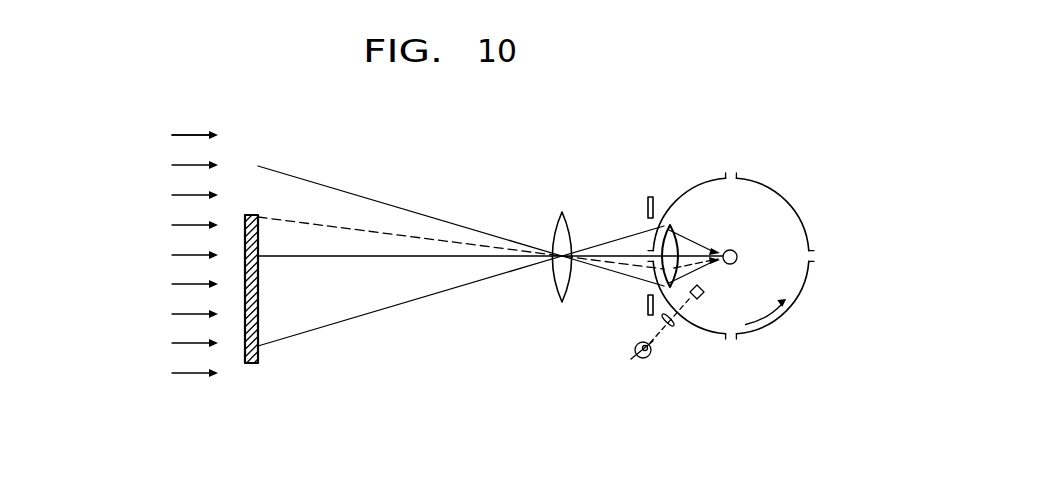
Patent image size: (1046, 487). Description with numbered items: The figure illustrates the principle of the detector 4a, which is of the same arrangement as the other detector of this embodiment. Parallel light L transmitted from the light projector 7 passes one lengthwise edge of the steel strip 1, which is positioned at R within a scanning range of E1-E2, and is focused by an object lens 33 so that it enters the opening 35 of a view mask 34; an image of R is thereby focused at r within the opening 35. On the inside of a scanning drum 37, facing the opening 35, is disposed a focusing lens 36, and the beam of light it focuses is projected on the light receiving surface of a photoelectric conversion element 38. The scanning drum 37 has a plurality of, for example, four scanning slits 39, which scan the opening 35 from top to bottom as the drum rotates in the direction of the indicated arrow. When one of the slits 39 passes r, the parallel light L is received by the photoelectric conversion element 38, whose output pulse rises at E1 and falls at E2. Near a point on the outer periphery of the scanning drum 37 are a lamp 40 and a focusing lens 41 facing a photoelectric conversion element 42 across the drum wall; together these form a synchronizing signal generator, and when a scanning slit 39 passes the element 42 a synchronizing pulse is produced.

The light projector 7 is at (171, 254).
The parallel light L is at (190, 134).
The edge position R is at (252, 215).
The steel strip 1 is at (259, 300).
The scanning range limit E1 is at (461, 304).
The scanning range limit E2 is at (459, 213).
The detector 4a is at (498, 186).
The object lens 33 is at (558, 240).
The view mask 34 is at (645, 202).
The opening 35 is at (646, 308).
The image of edge r is at (640, 270).
The focusing lens 36 is at (672, 238).
The scanning drum 37 is at (788, 203).
The photoelectric conversion element 38 is at (733, 249).
The scanning slits 39 is at (729, 172).
The lamp 40 is at (644, 359).
The focusing lens 41 is at (671, 328).
The photoelectric conversion element 42 is at (705, 290).